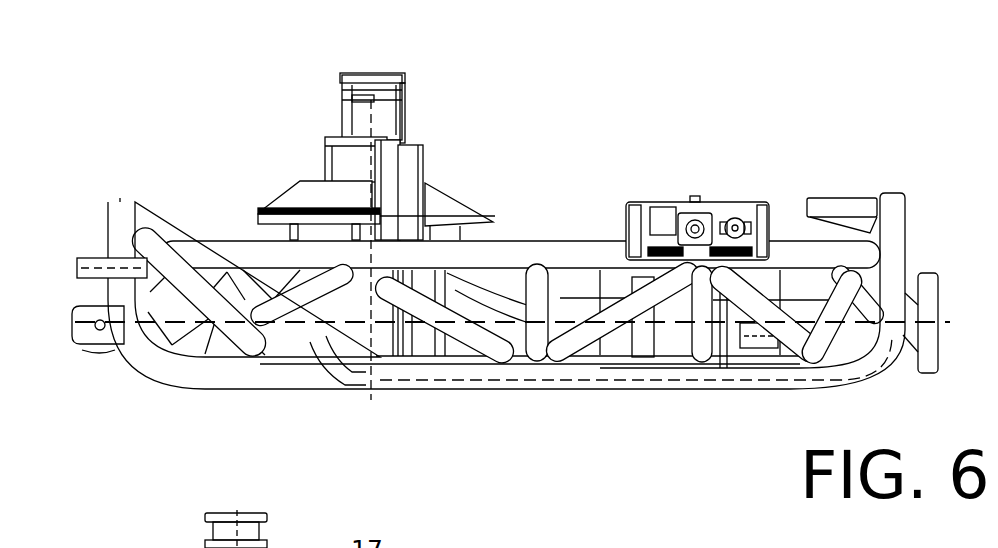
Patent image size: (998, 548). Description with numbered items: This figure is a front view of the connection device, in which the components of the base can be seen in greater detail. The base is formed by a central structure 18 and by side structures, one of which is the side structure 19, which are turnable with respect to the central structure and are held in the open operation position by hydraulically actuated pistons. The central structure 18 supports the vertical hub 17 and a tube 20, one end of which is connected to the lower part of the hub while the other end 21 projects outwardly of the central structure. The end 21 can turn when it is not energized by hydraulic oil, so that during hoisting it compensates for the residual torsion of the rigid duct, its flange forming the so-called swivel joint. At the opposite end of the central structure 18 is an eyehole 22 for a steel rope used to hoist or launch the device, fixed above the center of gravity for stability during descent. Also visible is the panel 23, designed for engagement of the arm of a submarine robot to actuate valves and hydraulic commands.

The vertical hub 17 is at (306, 124).
The central structure 18 is at (215, 365).
The side structure 19 is at (668, 383).
The tube 20 is at (560, 302).
The end of the tube 21 is at (935, 270).
The eyehole 22 is at (79, 278).
The panel 23 is at (722, 212).